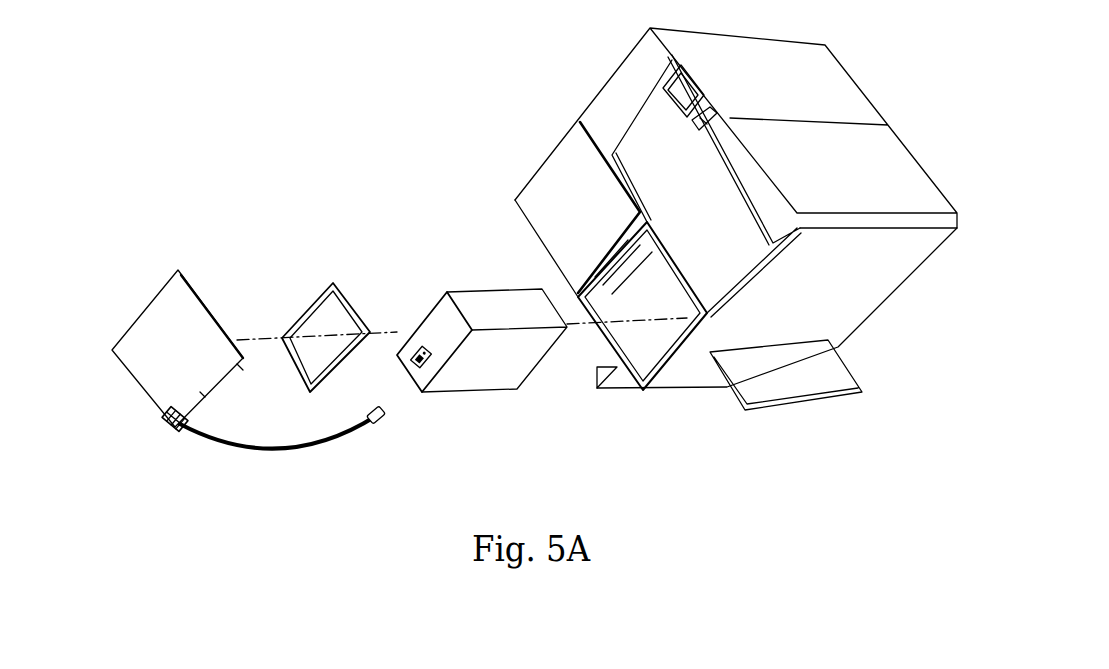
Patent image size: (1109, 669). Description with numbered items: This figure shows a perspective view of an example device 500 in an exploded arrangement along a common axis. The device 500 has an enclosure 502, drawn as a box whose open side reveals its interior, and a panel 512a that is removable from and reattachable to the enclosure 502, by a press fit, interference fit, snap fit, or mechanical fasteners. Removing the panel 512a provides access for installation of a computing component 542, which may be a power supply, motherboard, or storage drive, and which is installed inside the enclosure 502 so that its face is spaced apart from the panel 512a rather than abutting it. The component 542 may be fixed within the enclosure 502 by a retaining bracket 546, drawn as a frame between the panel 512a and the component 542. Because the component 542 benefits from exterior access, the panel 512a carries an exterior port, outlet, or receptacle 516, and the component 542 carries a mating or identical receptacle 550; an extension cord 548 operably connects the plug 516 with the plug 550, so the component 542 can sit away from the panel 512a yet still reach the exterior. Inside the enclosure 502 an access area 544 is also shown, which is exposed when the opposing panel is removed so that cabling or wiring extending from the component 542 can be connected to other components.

The example device 500 is at (334, 198).
The enclosure 502 is at (876, 336).
The panel 512a is at (135, 350).
The receptacle 516 is at (165, 428).
The computing component 542 is at (487, 307).
The access area 544 is at (645, 350).
The retaining bracket 546 is at (307, 303).
The extension cord 548 is at (278, 452).
The receptacle 550 is at (428, 362).